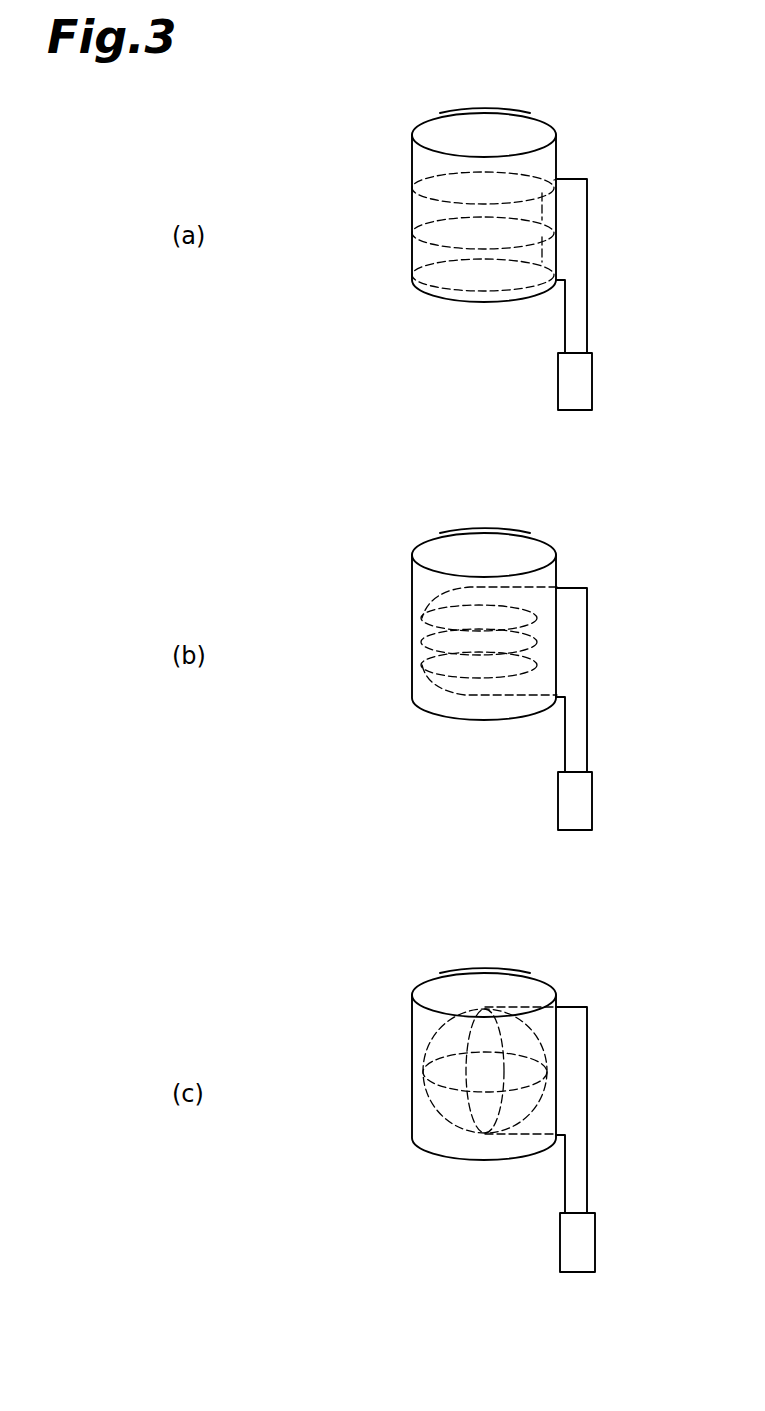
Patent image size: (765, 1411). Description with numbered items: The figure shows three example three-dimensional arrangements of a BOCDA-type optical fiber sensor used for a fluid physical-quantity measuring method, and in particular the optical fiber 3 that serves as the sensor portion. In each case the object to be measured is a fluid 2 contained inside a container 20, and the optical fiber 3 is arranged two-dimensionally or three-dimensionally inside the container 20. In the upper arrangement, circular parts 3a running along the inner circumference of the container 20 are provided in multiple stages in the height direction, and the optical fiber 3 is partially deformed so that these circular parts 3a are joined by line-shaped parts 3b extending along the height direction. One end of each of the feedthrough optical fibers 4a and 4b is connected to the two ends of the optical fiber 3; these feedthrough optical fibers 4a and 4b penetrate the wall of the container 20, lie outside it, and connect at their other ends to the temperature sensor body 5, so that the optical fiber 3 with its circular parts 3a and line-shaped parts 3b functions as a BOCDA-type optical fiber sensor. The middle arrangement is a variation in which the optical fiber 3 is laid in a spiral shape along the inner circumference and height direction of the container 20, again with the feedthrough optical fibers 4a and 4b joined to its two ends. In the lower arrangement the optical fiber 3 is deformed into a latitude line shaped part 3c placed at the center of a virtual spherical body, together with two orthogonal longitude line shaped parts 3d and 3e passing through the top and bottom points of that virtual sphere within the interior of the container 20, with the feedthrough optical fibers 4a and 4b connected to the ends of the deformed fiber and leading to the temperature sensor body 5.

The fluid 2 is at (517, 128).
The container 20 is at (470, 112).
The optical fiber 3 is at (427, 178).
The circular parts 3a is at (418, 272).
The line-shaped parts 3b is at (560, 182).
The latitude line shaped part 3c is at (432, 1100).
The longitude line shaped part 3d is at (428, 1038).
The longitude line shaped part 3e is at (467, 1117).
The feedthrough optical fiber 4a is at (565, 318).
The feedthrough optical fiber 4b is at (588, 278).
The temperature sensor body 5 is at (585, 381).